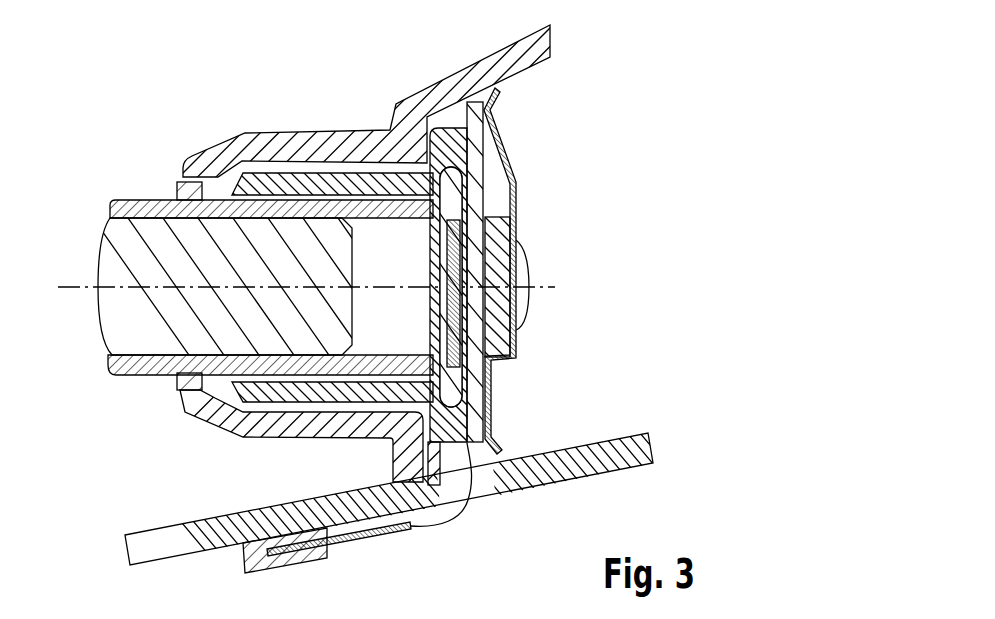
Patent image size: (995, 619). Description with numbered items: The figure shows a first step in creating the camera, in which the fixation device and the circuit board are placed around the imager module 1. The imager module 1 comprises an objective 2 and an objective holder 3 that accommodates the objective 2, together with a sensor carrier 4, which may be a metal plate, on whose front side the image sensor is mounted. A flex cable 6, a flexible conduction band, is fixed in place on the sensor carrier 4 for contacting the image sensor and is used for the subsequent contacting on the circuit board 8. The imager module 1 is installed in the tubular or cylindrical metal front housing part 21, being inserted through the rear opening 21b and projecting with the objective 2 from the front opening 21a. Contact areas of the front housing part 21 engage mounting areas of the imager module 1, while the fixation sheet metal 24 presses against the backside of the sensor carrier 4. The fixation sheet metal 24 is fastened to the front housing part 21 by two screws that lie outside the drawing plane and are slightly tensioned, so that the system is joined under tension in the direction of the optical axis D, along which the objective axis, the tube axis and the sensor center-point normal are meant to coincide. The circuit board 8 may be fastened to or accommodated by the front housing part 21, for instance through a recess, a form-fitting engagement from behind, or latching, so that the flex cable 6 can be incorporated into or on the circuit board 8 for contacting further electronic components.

The imager module 1 is at (113, 185).
The objective 2 is at (140, 376).
The objective holder 3 is at (370, 178).
The sensor carrier 4 is at (476, 178).
The flex cable 6 is at (368, 540).
The circuit board 8 is at (583, 450).
The front housing part 21 is at (258, 147).
The front opening 21a is at (180, 181).
The rear opening 21b is at (507, 130).
The fixation sheet metal 24 is at (518, 230).
The optical axis D is at (70, 290).